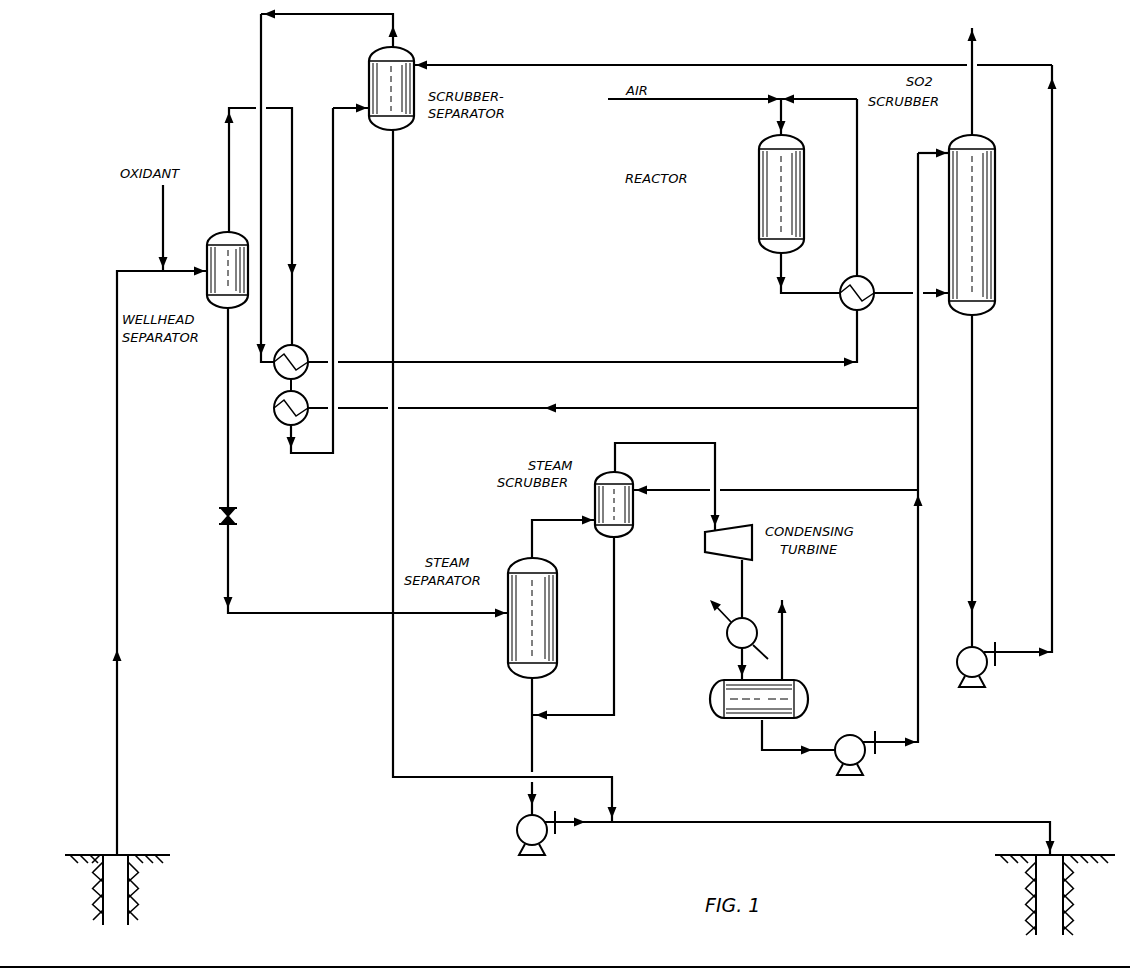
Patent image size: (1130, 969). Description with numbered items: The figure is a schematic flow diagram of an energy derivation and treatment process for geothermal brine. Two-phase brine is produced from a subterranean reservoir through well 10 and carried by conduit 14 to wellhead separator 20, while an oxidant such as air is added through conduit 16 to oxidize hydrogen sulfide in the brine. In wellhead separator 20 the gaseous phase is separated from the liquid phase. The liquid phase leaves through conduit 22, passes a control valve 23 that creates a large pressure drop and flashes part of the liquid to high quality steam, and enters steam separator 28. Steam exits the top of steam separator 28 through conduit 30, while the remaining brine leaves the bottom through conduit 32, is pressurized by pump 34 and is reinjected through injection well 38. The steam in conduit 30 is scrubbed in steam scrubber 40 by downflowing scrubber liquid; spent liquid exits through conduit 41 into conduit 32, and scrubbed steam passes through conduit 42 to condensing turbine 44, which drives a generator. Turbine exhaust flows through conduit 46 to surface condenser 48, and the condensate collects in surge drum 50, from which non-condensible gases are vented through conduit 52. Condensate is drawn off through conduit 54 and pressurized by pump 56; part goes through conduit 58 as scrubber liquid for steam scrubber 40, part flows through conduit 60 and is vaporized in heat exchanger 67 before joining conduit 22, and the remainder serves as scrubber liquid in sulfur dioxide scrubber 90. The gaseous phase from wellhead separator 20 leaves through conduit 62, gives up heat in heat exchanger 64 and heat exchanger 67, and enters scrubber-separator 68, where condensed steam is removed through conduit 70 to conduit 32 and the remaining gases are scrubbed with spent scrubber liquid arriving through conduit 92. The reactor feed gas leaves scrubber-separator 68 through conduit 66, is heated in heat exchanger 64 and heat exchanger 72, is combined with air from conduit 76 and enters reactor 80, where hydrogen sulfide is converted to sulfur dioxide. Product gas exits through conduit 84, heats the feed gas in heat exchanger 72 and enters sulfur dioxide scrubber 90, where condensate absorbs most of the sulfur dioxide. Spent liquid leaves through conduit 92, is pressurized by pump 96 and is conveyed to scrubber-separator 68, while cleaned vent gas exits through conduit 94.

The well 10 is at (112, 898).
The conduit 14 is at (118, 364).
The conduit 16 is at (163, 223).
The wellhead separator 20 is at (214, 290).
The conduit 22 is at (228, 414).
The control valve 23 is at (222, 516).
The steam separator 28 is at (517, 641).
The conduit 30 is at (532, 535).
The conduit 32 is at (530, 742).
The pump 34 is at (518, 829).
The injection well 38 is at (1040, 897).
The steam scrubber 40 is at (618, 507).
The conduit 41 is at (617, 614).
The conduit 42 is at (718, 452).
The condensing turbine 44 is at (727, 546).
The conduit 46 is at (745, 578).
The surface condenser 48 is at (730, 638).
The surge drum 50 is at (808, 684).
The conduit 52 is at (785, 632).
The conduit 54 is at (918, 600).
The pump 56 is at (848, 777).
The conduit 58 is at (808, 489).
The conduit 60 is at (846, 411).
The conduit 62 is at (228, 126).
The heat exchanger 64 is at (296, 346).
The conduit 66 is at (261, 40).
The heat exchanger 67 is at (279, 398).
The scrubber-separator 68 is at (390, 84).
The conduit 70 is at (395, 168).
The heat exchanger 72 is at (843, 306).
The conduit 76 is at (654, 101).
The reactor 80 is at (800, 162).
The conduit 84 is at (785, 266).
The sulfur dioxide scrubber 90 is at (975, 206).
The conduit 92 is at (1054, 500).
The conduit 94 is at (975, 100).
The pump 96 is at (968, 688).